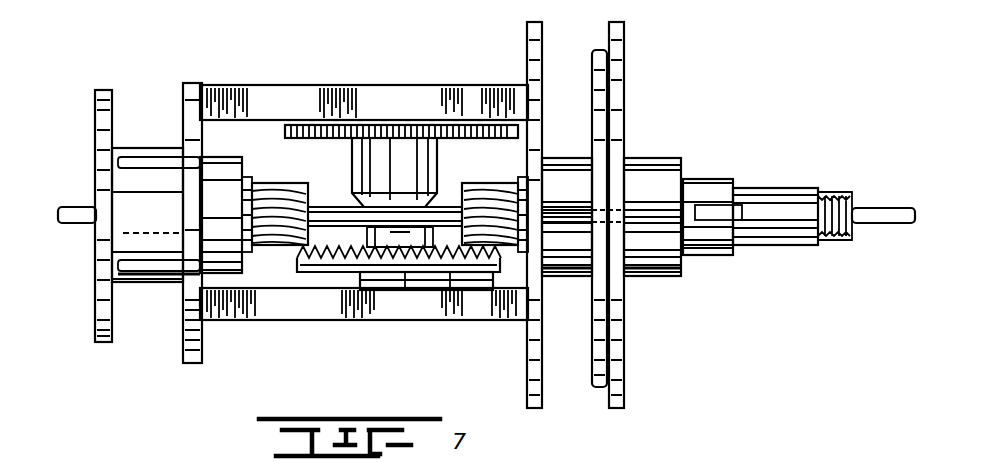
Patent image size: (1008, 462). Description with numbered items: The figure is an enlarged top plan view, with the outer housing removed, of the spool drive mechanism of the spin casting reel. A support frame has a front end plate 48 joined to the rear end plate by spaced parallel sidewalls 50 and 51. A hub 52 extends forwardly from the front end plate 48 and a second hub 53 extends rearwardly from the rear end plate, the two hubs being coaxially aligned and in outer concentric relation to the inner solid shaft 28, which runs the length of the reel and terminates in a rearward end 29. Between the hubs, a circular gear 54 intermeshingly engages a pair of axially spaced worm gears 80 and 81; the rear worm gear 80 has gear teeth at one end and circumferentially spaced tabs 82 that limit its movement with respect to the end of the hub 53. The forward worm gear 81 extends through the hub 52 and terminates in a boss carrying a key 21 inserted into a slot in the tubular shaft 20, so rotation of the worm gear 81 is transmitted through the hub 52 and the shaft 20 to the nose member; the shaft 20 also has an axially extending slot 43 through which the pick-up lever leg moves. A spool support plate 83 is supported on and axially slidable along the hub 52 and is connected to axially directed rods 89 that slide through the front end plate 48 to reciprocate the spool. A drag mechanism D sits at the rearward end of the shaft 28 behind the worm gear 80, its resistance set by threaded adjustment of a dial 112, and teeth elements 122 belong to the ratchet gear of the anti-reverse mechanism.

The tubular shaft 20 is at (785, 195).
The key 21 is at (710, 210).
The solid shaft 28 is at (882, 210).
The rearward end 29 is at (76, 200).
The axially extending slot 43 is at (772, 228).
The front end plate 48 is at (527, 40).
The sidewall 50 is at (290, 88).
The sidewall 51 is at (263, 320).
The hub 52 is at (657, 276).
The second hub 53 is at (123, 234).
The circular gear 54 is at (340, 255).
The worm gear 80 is at (268, 183).
The worm gear 81 is at (490, 186).
The tabs 82 is at (154, 160).
The spool support plate 83 is at (604, 44).
The axially directed rods 89 is at (553, 210).
The dial 112 is at (97, 295).
The teeth elements 122 is at (350, 130).
The drag mechanism D is at (208, 157).